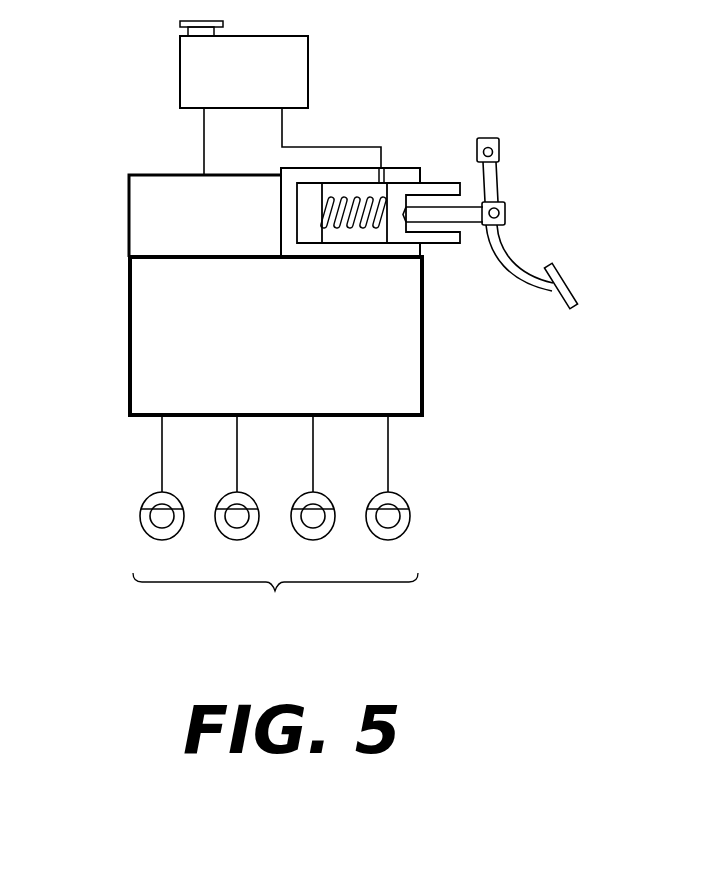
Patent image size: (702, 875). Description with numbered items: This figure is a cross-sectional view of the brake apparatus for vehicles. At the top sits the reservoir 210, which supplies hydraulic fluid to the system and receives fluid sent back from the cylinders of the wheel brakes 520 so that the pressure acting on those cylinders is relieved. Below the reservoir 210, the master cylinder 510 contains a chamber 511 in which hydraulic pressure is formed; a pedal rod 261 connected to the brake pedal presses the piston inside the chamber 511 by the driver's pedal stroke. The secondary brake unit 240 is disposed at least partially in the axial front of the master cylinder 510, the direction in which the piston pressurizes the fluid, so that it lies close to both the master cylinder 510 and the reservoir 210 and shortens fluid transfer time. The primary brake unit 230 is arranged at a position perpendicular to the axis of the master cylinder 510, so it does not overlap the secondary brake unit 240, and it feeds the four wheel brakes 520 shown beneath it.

The reservoir 210 is at (180, 73).
The secondary brake unit 240 is at (129, 213).
The master cylinder 510 is at (405, 172).
The chamber 511 is at (354, 194).
The pedal rod 261 is at (473, 220).
The primary brake unit 230 is at (422, 380).
The wheel brake 520 is at (275, 520).